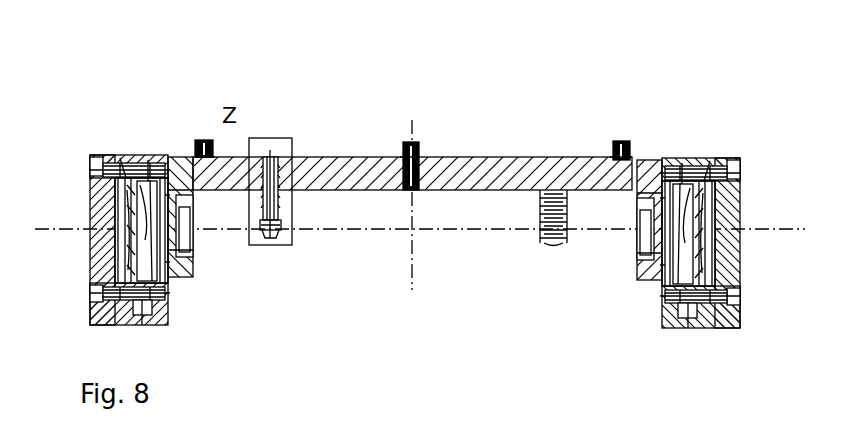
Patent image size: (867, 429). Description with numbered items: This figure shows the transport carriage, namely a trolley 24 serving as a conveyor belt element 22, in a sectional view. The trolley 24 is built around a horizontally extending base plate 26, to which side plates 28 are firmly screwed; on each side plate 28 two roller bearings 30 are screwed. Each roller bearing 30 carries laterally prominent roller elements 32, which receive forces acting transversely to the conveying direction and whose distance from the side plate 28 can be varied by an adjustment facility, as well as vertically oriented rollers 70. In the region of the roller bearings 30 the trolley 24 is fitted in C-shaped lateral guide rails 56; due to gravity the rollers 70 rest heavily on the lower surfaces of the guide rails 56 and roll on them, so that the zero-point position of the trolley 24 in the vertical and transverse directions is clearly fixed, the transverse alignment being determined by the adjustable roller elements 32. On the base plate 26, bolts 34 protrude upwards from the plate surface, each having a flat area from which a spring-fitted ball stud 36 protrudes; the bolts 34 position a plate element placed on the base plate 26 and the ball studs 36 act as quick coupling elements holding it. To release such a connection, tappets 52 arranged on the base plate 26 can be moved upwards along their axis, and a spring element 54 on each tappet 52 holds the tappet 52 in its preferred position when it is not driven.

The conveyor belt element 22 is at (515, 72).
The trolley 24 is at (508, 78).
The base plate 26 is at (448, 175).
The side plate 28 is at (183, 160).
The roller bearing 30 is at (146, 165).
The roller element 32 is at (125, 222).
The bolt 34 is at (204, 150).
The ball stud 36 is at (214, 155).
The tappet 52 is at (277, 245).
The spring element 54 is at (280, 207).
The guide rail 56 is at (120, 325).
The roller 70 is at (128, 163).